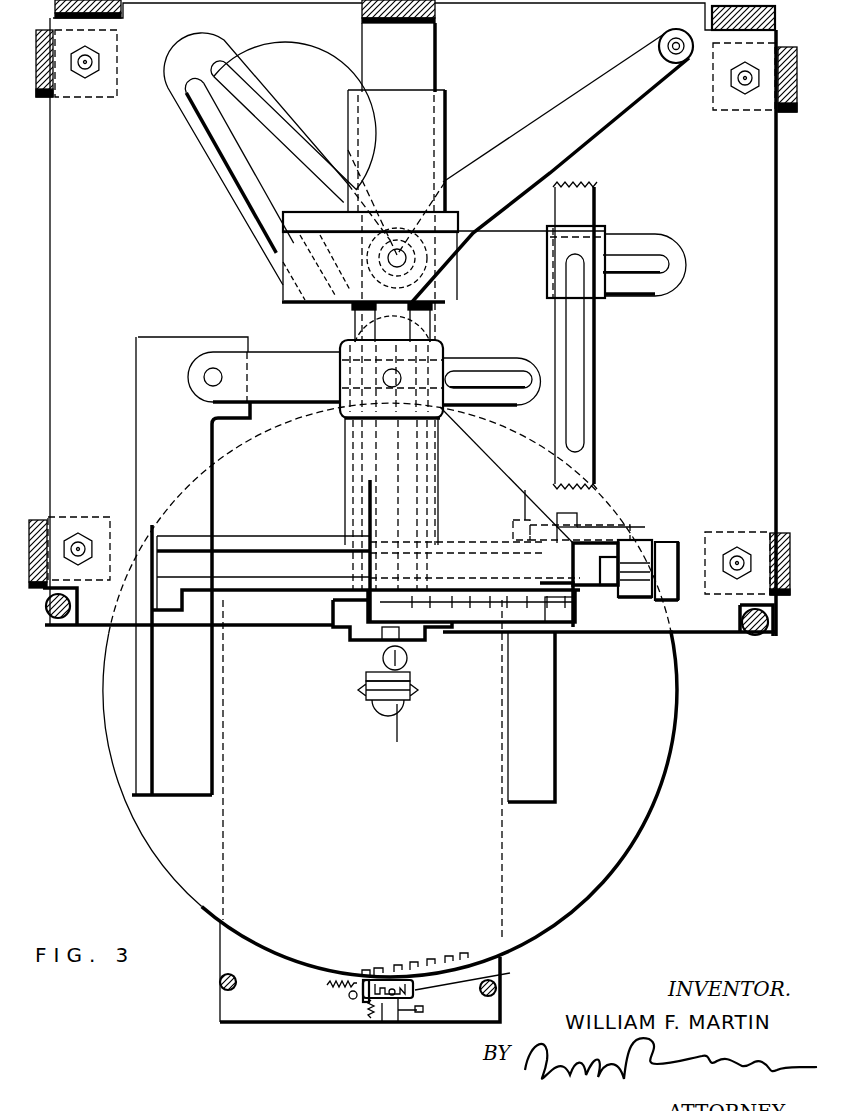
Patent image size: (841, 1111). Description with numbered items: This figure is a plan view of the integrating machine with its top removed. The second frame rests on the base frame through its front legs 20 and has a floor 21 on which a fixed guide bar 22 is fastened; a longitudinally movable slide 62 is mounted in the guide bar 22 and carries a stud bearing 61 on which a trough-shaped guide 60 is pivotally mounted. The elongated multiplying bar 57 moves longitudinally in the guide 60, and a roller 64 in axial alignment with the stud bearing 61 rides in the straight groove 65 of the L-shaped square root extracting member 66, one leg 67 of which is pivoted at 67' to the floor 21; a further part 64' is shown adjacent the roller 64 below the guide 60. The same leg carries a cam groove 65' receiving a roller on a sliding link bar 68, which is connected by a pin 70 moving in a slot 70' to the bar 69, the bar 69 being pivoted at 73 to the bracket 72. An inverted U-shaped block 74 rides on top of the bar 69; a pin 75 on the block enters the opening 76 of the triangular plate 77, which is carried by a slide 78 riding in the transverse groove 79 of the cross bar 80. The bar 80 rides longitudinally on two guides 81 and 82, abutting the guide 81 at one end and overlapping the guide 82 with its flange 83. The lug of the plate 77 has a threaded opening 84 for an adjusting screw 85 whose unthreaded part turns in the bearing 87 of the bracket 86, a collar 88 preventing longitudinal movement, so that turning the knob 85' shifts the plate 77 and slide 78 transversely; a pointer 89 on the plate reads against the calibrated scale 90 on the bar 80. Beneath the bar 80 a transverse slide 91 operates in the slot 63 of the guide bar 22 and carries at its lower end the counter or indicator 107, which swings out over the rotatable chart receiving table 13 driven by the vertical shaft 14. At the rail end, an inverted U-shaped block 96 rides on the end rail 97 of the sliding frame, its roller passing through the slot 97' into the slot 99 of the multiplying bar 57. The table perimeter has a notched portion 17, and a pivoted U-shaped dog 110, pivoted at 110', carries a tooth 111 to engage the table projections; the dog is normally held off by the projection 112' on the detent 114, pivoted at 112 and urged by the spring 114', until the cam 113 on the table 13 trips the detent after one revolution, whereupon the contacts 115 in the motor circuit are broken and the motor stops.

The chart receiving table 13 is at (577, 888).
The vertical shaft 14 is at (380, 700).
The notched portion 17 is at (415, 972).
The legs 20 is at (760, 635).
The floor 21 is at (743, 183).
The guide bar 22 is at (425, 63).
The multiplying bar 57 is at (665, 280).
The trough-shaped guide 60 is at (540, 183).
The stud bearing 61 is at (543, 213).
The longitudinally movable slide 62 is at (420, 128).
The slot 63 is at (408, 643).
The roller 64 is at (424, 175).
The slide nuts 64' is at (428, 317).
The straight slot or groove 65 is at (261, 163).
The cam groove 65' is at (204, 159).
The square root extracting member 66 is at (237, 122).
The leg 67 is at (550, 168).
The pivot 67' is at (683, 63).
The sliding link bar 68 is at (410, 335).
The bar 69 is at (520, 365).
The pin 70 is at (547, 369).
The slot 70' is at (554, 392).
The bracket 72 is at (162, 377).
The pivot 73 is at (208, 372).
The inverted U-shaped block 74 is at (338, 347).
The pin 75 is at (382, 383).
The opening 76 is at (390, 393).
The triangular plate 77 is at (490, 485).
The slide 78 is at (355, 552).
The transverse groove 79 is at (300, 557).
The bar 80 is at (202, 538).
The guide 81 is at (143, 633).
The guide 82 is at (543, 647).
The flange 83 is at (577, 598).
The threaded opening 84 is at (585, 540).
The adjusting screw 85 is at (660, 543).
The knob 85' is at (670, 613).
The bracket 86 is at (640, 542).
The bearing 87 is at (657, 547).
The collar 88 is at (620, 583).
The pointer 89 is at (575, 597).
The calibrated scale 90 is at (495, 603).
The slide 91 is at (370, 648).
The inverted U-shaped block 96 is at (605, 230).
The end rail 97 is at (624, 335).
The slot 97' is at (609, 353).
The slot 99 is at (650, 263).
The counter or indicator 107 is at (419, 726).
The U-shaped dog 110 is at (374, 1045).
The pivot 110' is at (408, 1035).
The tooth 111 is at (502, 977).
The pivot 112 is at (353, 1025).
The projection 112' is at (352, 1034).
The cam 113 is at (348, 977).
The detent 114 is at (289, 1024).
The spring 114' is at (306, 1001).
The contacts 115 is at (407, 1003).